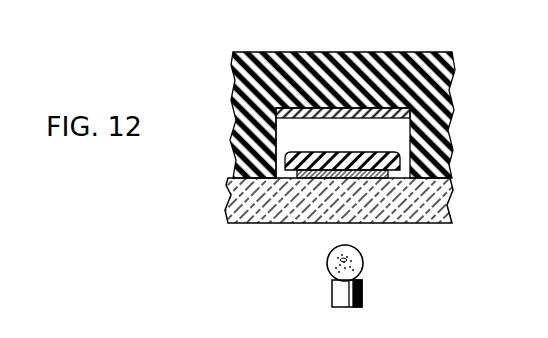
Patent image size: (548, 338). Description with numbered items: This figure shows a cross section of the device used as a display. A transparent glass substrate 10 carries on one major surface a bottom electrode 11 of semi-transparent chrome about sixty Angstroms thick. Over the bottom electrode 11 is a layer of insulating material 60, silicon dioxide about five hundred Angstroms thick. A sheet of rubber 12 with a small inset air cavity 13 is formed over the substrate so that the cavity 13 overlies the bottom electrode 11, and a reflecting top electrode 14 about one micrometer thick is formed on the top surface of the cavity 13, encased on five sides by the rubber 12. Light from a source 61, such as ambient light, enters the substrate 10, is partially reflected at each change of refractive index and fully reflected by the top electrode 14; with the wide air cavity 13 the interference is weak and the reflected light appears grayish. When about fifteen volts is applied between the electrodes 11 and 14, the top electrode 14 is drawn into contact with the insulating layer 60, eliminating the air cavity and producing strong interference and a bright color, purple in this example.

The sheet of rubber 12 is at (456, 65).
The top electrode 14 is at (444, 112).
The layer of insulating material 60 is at (400, 153).
The bottom electrode 11 is at (301, 178).
The substrate 10 is at (441, 201).
The cavity 13 is at (288, 140).
The light source 61 is at (361, 263).